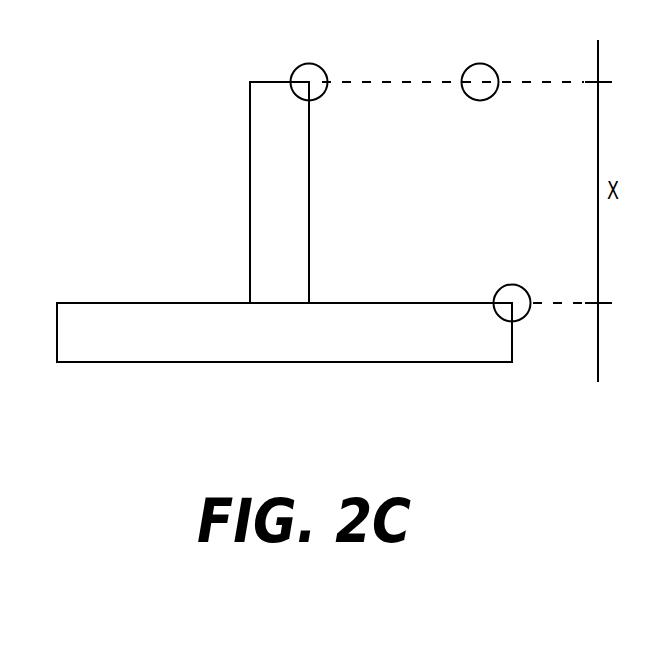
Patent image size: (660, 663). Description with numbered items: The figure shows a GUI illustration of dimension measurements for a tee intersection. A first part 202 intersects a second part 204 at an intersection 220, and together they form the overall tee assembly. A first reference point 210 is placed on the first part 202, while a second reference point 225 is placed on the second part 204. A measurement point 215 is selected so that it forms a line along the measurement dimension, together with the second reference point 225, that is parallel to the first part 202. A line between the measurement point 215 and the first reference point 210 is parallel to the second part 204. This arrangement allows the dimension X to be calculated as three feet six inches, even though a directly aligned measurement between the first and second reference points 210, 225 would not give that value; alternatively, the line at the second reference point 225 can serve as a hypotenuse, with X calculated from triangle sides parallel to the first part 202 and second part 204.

The first part 202 is at (258, 163).
The second part 204 is at (290, 347).
The first reference point 210 is at (306, 80).
The measurement point 215 is at (478, 80).
The intersection 220 is at (273, 302).
The second reference point 225 is at (512, 322).